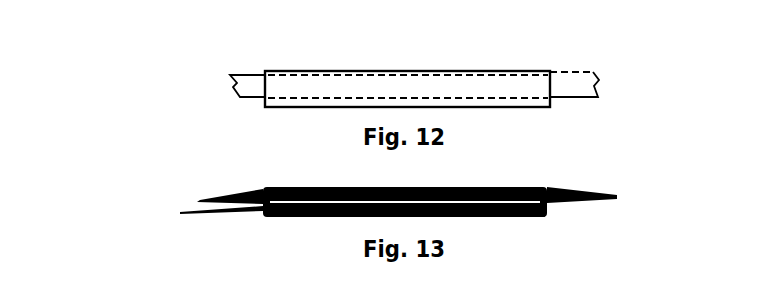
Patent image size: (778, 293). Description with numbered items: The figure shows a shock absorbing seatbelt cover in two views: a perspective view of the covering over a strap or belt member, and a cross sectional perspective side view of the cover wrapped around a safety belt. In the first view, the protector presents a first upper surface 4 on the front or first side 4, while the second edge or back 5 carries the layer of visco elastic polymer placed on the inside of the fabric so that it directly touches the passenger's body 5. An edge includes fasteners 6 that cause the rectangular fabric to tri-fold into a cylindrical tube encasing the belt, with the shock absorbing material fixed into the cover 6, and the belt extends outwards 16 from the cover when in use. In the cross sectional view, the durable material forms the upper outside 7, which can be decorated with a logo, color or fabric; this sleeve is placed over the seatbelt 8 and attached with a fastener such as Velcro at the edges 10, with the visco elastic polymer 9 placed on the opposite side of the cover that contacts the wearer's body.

In FIG. 12, the first upper surface 4 is at (312, 82).
In FIG. 12, the second edge 5 is at (497, 62).
In FIG. 12, the fasteners 6 is at (283, 111).
In FIG. 12, the belt extending outwards 16 is at (595, 80).
In FIG. 13, the upper outside 7 is at (300, 183).
In FIG. 13, the seatbelt 8 is at (553, 186).
In FIG. 13, the visco elastic polymer 9 is at (540, 218).
In FIG. 13, the edges 10 is at (182, 213).